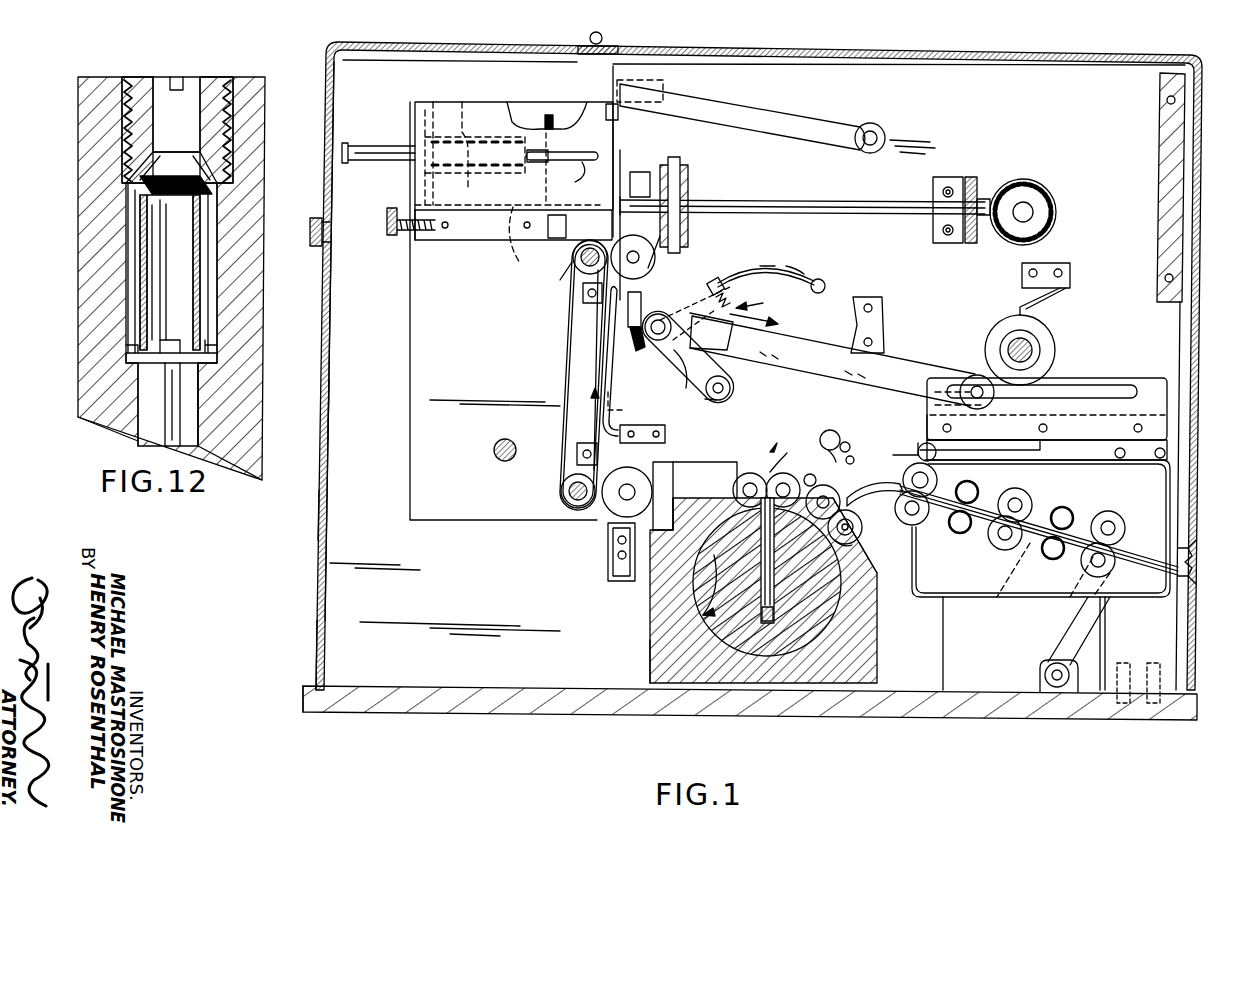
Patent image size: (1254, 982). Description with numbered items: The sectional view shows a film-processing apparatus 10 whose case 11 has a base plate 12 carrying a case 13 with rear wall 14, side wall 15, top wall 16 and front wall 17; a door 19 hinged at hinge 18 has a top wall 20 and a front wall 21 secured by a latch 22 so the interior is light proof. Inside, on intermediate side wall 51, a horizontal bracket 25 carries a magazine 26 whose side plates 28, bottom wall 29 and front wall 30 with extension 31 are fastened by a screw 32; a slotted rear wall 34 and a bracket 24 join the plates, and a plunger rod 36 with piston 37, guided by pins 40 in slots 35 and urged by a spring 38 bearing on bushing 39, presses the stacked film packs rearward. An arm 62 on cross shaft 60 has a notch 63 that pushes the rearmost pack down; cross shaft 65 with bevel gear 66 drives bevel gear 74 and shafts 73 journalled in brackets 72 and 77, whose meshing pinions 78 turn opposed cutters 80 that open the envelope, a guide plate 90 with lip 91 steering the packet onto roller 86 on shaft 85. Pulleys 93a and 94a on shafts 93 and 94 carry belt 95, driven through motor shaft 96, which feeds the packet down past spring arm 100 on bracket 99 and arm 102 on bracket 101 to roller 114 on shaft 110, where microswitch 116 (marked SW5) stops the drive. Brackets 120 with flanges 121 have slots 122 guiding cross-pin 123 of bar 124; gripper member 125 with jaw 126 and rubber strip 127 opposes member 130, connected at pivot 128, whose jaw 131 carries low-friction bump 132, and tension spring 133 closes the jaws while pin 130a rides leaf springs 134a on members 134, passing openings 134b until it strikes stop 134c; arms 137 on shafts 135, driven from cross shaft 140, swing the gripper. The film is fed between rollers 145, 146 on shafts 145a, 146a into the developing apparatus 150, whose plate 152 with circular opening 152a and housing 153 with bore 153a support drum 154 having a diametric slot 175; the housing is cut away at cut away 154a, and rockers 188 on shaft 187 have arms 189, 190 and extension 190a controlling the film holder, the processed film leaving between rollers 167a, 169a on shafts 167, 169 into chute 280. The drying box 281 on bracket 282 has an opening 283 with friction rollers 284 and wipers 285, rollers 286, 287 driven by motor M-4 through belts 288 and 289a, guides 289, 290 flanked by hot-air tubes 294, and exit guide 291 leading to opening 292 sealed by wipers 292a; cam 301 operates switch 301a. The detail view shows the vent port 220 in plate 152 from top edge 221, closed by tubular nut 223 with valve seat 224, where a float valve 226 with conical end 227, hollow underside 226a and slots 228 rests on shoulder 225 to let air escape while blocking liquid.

In FIG. 1, the machine 10 is at (292, 500).
In FIG. 1, the housing end wall 11 is at (1208, 278).
In FIG. 1, the base 12 is at (540, 708).
In FIG. 1, the side wall 13 is at (311, 640).
In FIG. 1, the end wall inner plate 14 is at (1191, 477).
In FIG. 1, the base plate 15 is at (423, 675).
In FIG. 1, the top rail 16 is at (880, 55).
In FIG. 1, the side wall 17 is at (329, 408).
In FIG. 1, the bolt 18 is at (602, 37).
In FIG. 1, the housing top 19 is at (492, 40).
In FIG. 1, the top cover 20 is at (517, 46).
In FIG. 1, the side wall 21 is at (326, 116).
In FIG. 1, the bracket 22 is at (310, 226).
In FIG. 1, the stop 24 is at (604, 106).
In FIG. 1, the slide block 25 is at (490, 235).
In FIG. 1, the hopper 26 is at (435, 100).
In FIG. 1, the notch 28 is at (531, 112).
In FIG. 1, the cam 29 is at (519, 262).
In FIG. 1, the magazine 30 is at (417, 118).
In FIG. 1, the guide 31 is at (418, 213).
In FIG. 1, the screw 32 is at (392, 210).
In FIG. 1, the frame plate 34 is at (619, 125).
In FIG. 1, the rod 35 is at (578, 163).
In FIG. 1, the push rod 36 is at (352, 146).
In FIG. 1, the stop pin 37 is at (550, 114).
In FIG. 1, the partition 38 is at (462, 102).
In FIG. 1, the cartridges 39 is at (430, 170).
In FIG. 1, the spring 40 is at (550, 172).
In FIG. 1, the panel 51 is at (434, 514).
In FIG. 1, the pivot 60 is at (880, 128).
In FIG. 1, the lever arm 62 is at (803, 130).
In FIG. 1, the stop block 63 is at (664, 84).
In FIG. 1, the shaft 65 is at (1030, 209).
In FIG. 1, the gear 66 is at (1057, 216).
In FIG. 1, the bearing block 72 is at (972, 177).
In FIG. 1, the shaft 73 is at (885, 214).
In FIG. 1, the coupling 74 is at (990, 238).
In FIG. 1, the block 77 is at (640, 172).
In FIG. 1, the disc 78 is at (679, 162).
In FIG. 1, the link 80 is at (622, 200).
In FIG. 1, the pulley 85 is at (658, 259).
In FIG. 1, the bracket 86 is at (588, 308).
In FIG. 1, the stop 90 is at (572, 230).
In FIG. 1, the pulley 91 is at (590, 247).
In FIG. 1, the hub 93 is at (578, 268).
In FIG. 1, the mount 93a is at (575, 290).
In FIG. 1, the pulley 94 is at (561, 492).
In FIG. 1, the hub 94a is at (565, 479).
In FIG. 1, the arm 95 is at (568, 350).
In FIG. 1, the stud 96 is at (496, 459).
In FIG. 1, the belt 99 is at (609, 330).
In FIG. 1, the belt run 100 is at (592, 398).
In FIG. 1, the bracket 101 is at (666, 436).
In FIG. 1, the block 102 is at (598, 455).
In FIG. 1, the pulley 110 is at (608, 503).
In FIG. 1, the post 114 is at (676, 472).
In FIG. 1, the switch bracket 116 is at (624, 565).
In FIG. 1, the switch SW5 is at (605, 578).
In FIG. 1, the slide 120 is at (930, 430).
In FIG. 1, the plate 121 is at (1150, 380).
In FIG. 1, the slot 122 is at (1098, 388).
In FIG. 1, the pivot 123 is at (975, 385).
In FIG. 1, the lever 124 is at (907, 367).
In FIG. 1, the pin 125 is at (730, 361).
In FIG. 1, the pawl 126 is at (641, 350).
In FIG. 1, the pivot pin 127 is at (649, 316).
In FIG. 1, the link 128 is at (687, 345).
In FIG. 1, the spring 130 is at (727, 286).
In FIG. 1, the spring end 130a is at (790, 270).
In FIG. 1, the bracket 131 is at (649, 403).
In FIG. 1, the cable 132 is at (665, 376).
In FIG. 1, the direction arrow 133 is at (758, 309).
In FIG. 1, the anchor 134 is at (722, 283).
In FIG. 1, the spring arm 134a is at (792, 262).
In FIG. 1, the anchor pin 134b is at (818, 279).
In FIG. 1, the bracket 134c is at (878, 306).
In FIG. 1, the roller 135 is at (731, 388).
In FIG. 1, the link end 137 is at (717, 402).
In FIG. 1, the plate edge 140 is at (926, 423).
In FIG. 1, the roller 145 is at (733, 486).
In FIG. 1, the roller 145a is at (772, 477).
In FIG. 1, the roller 146 is at (820, 440).
In FIG. 1, the guide 146a is at (834, 430).
In FIG. 1, the pin 167 is at (848, 443).
In FIG. 1, the pin 167a is at (873, 447).
In FIG. 1, the roller 169 is at (855, 515).
In FIG. 1, the roller hub 169a is at (850, 535).
In FIG. 1, the plunger 175 is at (780, 627).
In FIG. 1, the roller 187 is at (811, 474).
In FIG. 1, the guide 188 is at (787, 453).
In FIG. 1, the arrow 189 is at (775, 443).
In FIG. 1, the guide 190 is at (847, 490).
In FIG. 1, the guide end 190a is at (774, 526).
In FIG. 1, the drive unit 150 is at (647, 657).
In FIG. 1, the block 153 is at (884, 627).
In FIG. 1, the arrow 153a is at (718, 622).
In FIG. 1, the cam disc 154 is at (822, 636).
In FIG. 1, the disc edge 154a is at (840, 573).
In FIG. 1, the roller 280 is at (924, 446).
In FIG. 1, the solenoid 281 is at (1130, 604).
In FIG. 1, the solenoid 282 is at (1097, 654).
In FIG. 1, the roller frame 283 is at (925, 532).
In FIG. 1, the roller 284 is at (938, 479).
In FIG. 1, the plate 285 is at (952, 430).
In FIG. 1, the roller 286 is at (1026, 497).
In FIG. 1, the roller 287 is at (1124, 506).
In FIG. 1, the lever 288 is at (1078, 633).
In FIG. 1, the roller 289 is at (978, 492).
In FIG. 1, the roller 289a is at (1000, 580).
In FIG. 1, the roller 290 is at (1067, 508).
In FIG. 1, the bar 291 is at (1127, 552).
In FIG. 1, the bar end 292 is at (1192, 560).
In FIG. 1, the bar support 292a is at (1192, 548).
In FIG. 1, the link 294 is at (992, 545).
In FIG. 1, the pulley 301 is at (1047, 343).
In FIG. 1, the bracket 301a is at (1070, 282).
In FIG. 1, the motor M-4 is at (1040, 679).
In FIG. 12, the body 152 is at (80, 214).
In FIG. 12, the body bottom 152a is at (96, 424).
In FIG. 12, the lower body 220 is at (200, 398).
In FIG. 12, the threaded bushing 221 is at (88, 74).
In FIG. 12, the threaded insert 223 is at (208, 76).
In FIG. 12, the funnel 224 is at (158, 170).
In FIG. 12, the flange 225 is at (220, 356).
In FIG. 12, the tube 226 is at (220, 200).
In FIG. 12, the bore 226a is at (190, 288).
In FIG. 12, the seal 227 is at (148, 186).
In FIG. 12, the pin 228 is at (174, 355).